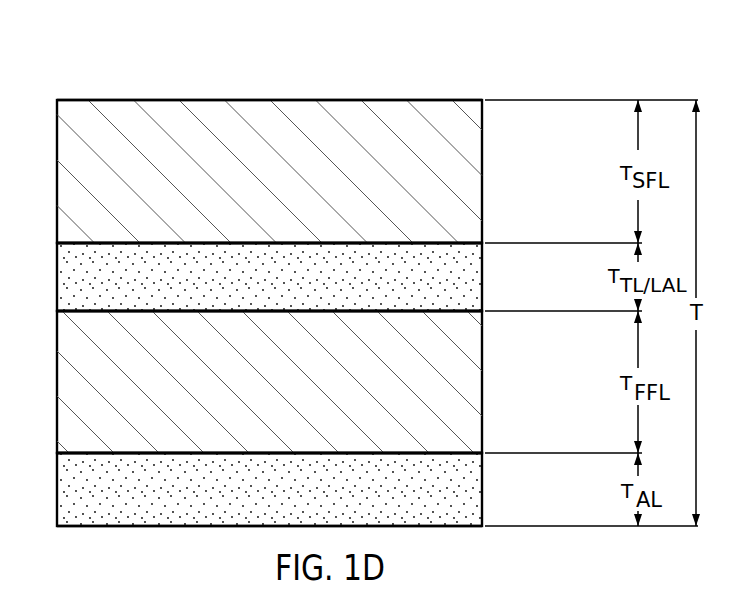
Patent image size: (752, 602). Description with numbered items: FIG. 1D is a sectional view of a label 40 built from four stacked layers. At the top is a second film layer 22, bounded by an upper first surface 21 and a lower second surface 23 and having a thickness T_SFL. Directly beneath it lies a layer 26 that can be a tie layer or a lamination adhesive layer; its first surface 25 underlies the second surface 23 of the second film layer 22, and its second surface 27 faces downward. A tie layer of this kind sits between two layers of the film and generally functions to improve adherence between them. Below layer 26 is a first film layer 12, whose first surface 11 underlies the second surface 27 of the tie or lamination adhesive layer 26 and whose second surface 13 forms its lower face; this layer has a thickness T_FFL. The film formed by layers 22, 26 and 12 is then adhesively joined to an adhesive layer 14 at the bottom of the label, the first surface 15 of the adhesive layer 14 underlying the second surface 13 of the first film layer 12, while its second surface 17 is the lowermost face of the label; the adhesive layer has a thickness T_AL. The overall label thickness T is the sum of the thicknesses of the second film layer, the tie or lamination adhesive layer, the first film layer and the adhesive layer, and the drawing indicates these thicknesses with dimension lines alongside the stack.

The label 40 is at (274, 275).
The second film layer 22 is at (483, 161).
The tie layer or lamination adhesive layer 26 is at (483, 283).
The first film layer 12 is at (483, 381).
The adhesive layer 14 is at (483, 497).
The first surface of the second film layer 21 is at (80, 101).
The second surface of the second film layer 23 is at (80, 243).
The first surface of the tie or lamination adhesive layer 25 is at (108, 245).
The second surface of the tie or lamination adhesive layer 27 is at (80, 311).
The first surface of the first film layer 11 is at (108, 312).
The second surface of the first film layer 13 is at (80, 453).
The first surface of the adhesive layer 15 is at (108, 454).
The second surface of the adhesive layer 17 is at (80, 526).